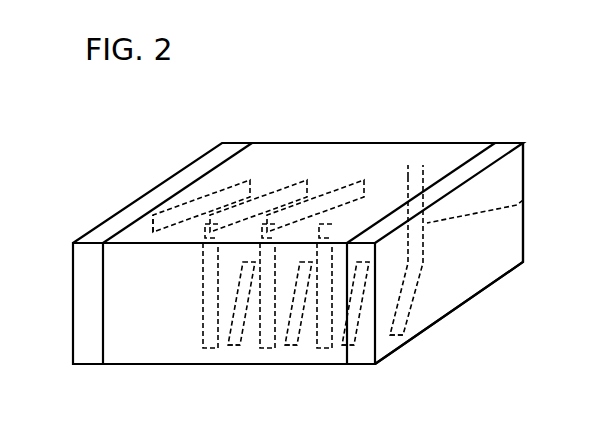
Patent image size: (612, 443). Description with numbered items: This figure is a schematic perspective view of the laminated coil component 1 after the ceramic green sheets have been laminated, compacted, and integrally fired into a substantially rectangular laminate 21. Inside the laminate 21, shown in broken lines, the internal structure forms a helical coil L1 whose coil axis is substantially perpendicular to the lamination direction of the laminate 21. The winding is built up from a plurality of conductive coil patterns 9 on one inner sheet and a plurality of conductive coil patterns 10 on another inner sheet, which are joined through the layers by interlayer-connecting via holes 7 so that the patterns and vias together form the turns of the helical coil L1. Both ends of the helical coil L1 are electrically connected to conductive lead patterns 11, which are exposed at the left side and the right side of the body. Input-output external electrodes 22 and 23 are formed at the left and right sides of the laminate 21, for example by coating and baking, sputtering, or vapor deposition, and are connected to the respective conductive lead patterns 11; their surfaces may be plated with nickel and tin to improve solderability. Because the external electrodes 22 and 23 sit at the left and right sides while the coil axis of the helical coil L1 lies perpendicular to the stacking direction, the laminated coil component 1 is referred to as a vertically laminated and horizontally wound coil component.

The laminated coil component 1 is at (122, 133).
The interlayer-connecting via holes 7 is at (268, 188).
The conductive coil patterns 9 is at (230, 178).
The conductive coil patterns 10 is at (232, 346).
The conductive lead pattern 11 is at (180, 176).
The laminate 21 is at (408, 147).
The input-output external electrode 22 is at (112, 217).
The input-output external electrode 23 is at (523, 238).
The helical coil L1 is at (200, 282).